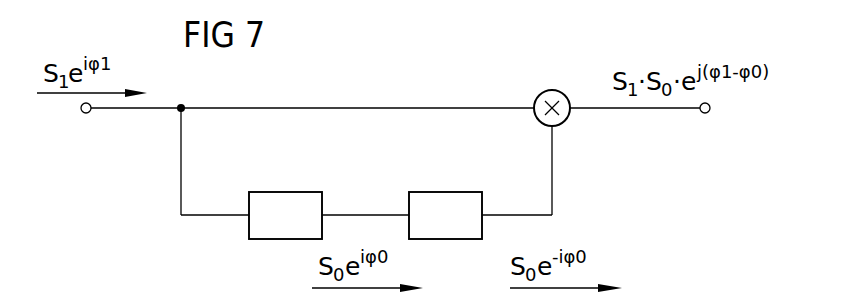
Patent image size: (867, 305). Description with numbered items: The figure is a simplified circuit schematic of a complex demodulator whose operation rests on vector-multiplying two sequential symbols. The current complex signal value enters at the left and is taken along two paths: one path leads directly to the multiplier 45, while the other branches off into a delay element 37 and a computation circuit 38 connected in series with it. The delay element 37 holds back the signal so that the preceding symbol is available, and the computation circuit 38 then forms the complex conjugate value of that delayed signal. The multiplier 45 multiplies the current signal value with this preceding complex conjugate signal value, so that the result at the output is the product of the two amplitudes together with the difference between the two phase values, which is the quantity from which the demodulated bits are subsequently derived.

The delay element 37 is at (287, 192).
The computation circuit 38 is at (445, 192).
The multiplier 45 is at (550, 90).